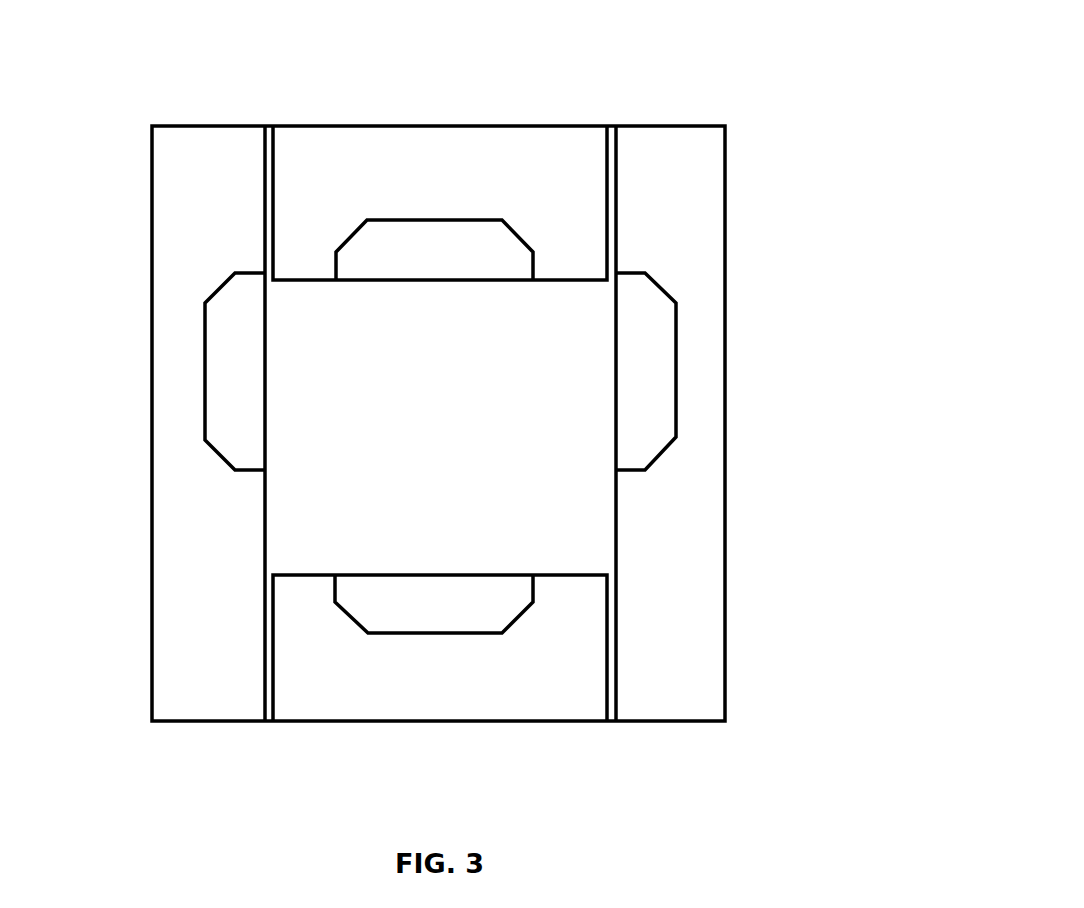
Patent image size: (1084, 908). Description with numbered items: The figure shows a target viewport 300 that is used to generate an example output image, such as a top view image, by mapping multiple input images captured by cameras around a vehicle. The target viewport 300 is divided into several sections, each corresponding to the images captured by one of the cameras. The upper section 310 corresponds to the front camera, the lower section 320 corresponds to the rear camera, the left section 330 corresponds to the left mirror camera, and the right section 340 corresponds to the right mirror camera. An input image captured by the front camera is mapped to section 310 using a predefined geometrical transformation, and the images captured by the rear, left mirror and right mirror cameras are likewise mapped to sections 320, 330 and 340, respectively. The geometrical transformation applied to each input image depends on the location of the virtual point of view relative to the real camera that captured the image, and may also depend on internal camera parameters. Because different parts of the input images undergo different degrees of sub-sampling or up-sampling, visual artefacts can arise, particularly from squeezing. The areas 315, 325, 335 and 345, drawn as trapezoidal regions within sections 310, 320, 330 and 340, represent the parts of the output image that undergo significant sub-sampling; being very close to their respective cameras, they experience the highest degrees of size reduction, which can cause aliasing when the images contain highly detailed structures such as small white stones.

The target viewport 300 is at (657, 83).
The section 310 is at (508, 124).
The area 315 is at (441, 219).
The section 320 is at (497, 722).
The area 325 is at (468, 636).
The section 330 is at (146, 172).
The area 335 is at (204, 355).
The section 340 is at (728, 203).
The area 345 is at (673, 293).